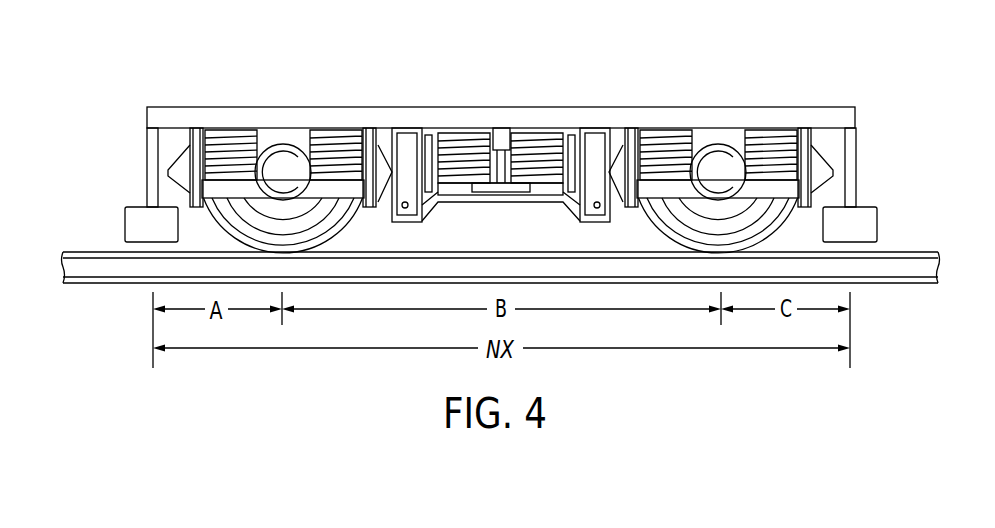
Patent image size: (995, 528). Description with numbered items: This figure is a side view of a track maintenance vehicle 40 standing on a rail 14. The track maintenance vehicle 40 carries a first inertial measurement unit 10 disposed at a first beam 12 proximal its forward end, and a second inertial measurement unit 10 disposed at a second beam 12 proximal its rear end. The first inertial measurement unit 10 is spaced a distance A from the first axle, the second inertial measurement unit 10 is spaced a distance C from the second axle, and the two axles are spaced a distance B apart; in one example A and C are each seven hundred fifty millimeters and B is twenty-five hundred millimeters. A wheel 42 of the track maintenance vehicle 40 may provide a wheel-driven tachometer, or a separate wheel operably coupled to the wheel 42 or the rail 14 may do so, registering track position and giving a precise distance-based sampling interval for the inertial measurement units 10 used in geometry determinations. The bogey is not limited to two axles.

The inertial measurement unit 10 is at (110, 222).
The beam 12 is at (137, 205).
The rail 14 is at (917, 270).
The track maintenance vehicle 40 is at (766, 75).
The wheel 42 is at (645, 222).